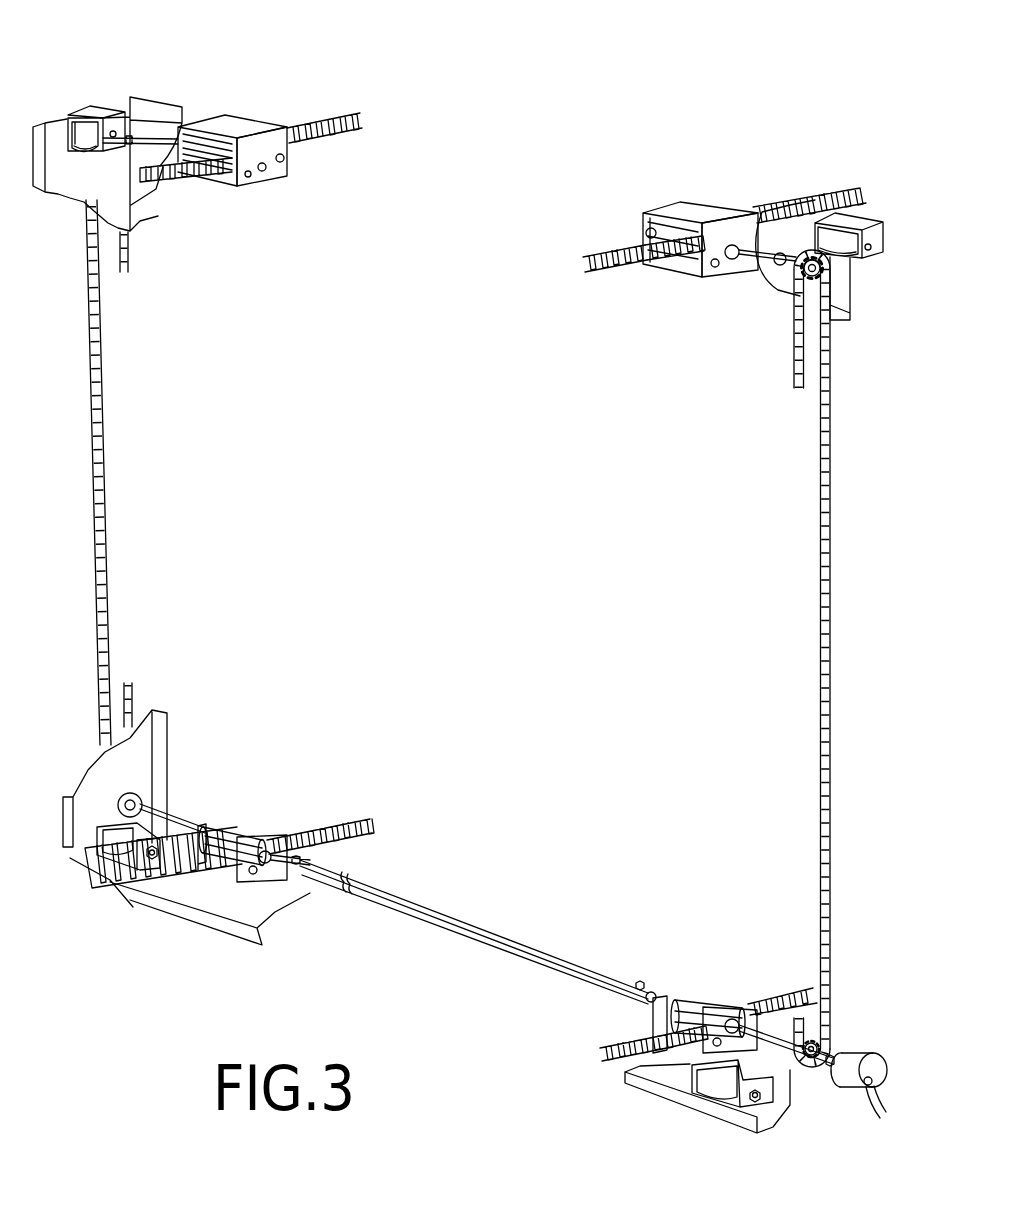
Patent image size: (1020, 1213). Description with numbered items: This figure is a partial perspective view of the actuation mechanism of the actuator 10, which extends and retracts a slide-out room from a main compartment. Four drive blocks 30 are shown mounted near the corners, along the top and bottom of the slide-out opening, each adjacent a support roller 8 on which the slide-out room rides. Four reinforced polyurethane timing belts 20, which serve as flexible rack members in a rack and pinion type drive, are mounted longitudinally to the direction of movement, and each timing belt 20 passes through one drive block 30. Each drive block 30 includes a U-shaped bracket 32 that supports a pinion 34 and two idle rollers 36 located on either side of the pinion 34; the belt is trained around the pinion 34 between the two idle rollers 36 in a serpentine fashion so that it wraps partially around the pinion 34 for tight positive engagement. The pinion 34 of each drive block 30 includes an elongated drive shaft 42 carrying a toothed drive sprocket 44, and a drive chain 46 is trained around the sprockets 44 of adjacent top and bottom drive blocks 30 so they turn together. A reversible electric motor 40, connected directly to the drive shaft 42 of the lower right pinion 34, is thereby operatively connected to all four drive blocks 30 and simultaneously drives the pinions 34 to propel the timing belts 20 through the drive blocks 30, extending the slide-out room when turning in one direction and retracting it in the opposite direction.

The support rollers 8 is at (88, 137).
The actuator apparatus 10 is at (70, 453).
The timing belts 20 is at (337, 143).
The drive blocks 30 is at (267, 183).
The U-shaped bracket 32 is at (243, 125).
The pinion 34 is at (200, 140).
The idle rollers 36 is at (222, 168).
The reversible electric motor 40 is at (867, 1085).
The drive shaft 42 is at (762, 260).
The drive sprocket 44 is at (816, 284).
The drive chain 46 is at (106, 562).